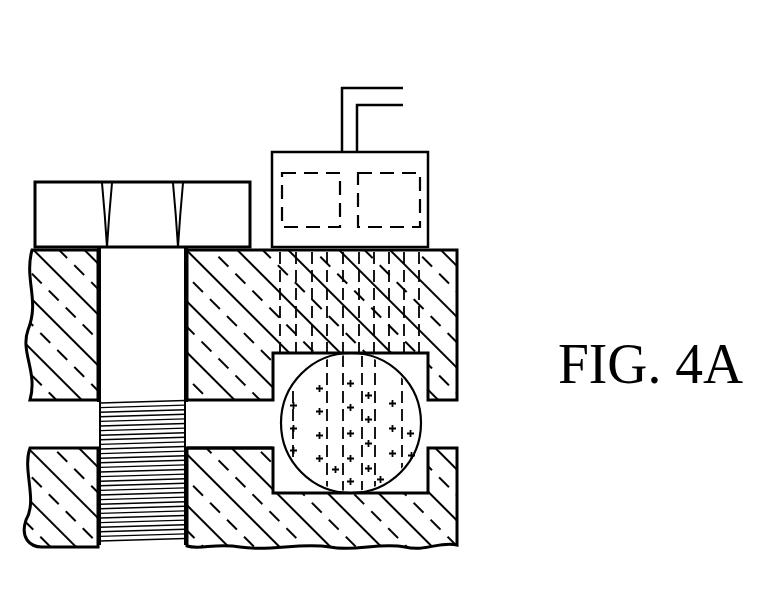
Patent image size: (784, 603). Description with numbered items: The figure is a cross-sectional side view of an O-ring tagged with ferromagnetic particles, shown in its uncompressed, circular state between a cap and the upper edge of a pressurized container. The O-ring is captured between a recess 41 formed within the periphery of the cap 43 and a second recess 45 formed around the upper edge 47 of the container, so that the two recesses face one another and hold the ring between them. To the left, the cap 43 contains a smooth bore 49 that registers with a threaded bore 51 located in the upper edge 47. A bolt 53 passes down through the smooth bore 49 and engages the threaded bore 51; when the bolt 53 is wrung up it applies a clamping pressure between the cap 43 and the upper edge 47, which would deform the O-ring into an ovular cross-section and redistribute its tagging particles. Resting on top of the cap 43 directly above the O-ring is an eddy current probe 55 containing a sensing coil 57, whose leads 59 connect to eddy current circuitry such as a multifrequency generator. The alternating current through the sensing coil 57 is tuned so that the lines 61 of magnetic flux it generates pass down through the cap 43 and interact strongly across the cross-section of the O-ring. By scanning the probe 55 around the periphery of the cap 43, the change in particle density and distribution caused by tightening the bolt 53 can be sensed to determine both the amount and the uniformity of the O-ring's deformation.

The recess 41 is at (426, 397).
The cap 43 is at (456, 283).
The recess 45 is at (397, 480).
The upper edge 47 is at (253, 447).
The smooth bore 49 is at (182, 333).
The threaded bore 51 is at (172, 515).
The bolt 53 is at (160, 181).
The eddy current probe 55 is at (305, 140).
The sensing coil 57 is at (418, 210).
The leads 59 is at (365, 48).
The lines of magnetic flux 61 is at (413, 326).